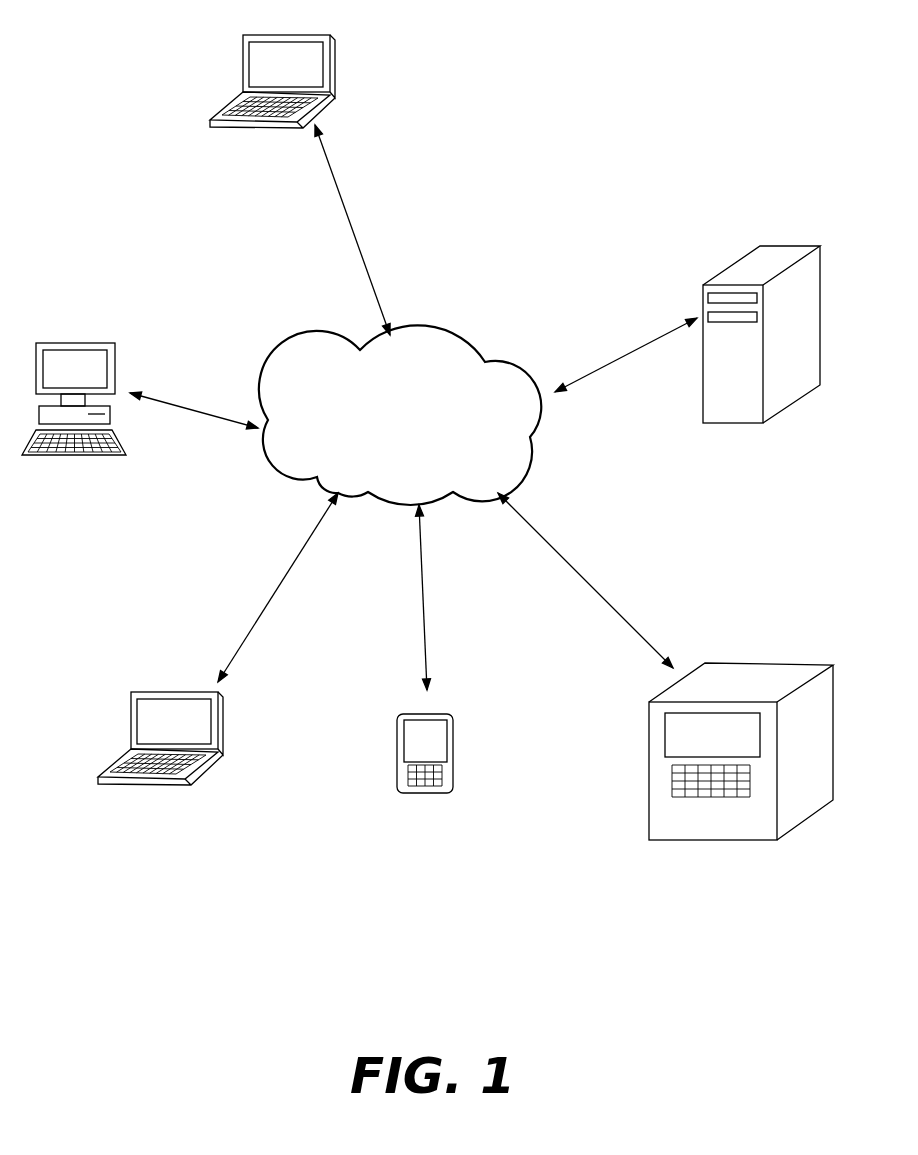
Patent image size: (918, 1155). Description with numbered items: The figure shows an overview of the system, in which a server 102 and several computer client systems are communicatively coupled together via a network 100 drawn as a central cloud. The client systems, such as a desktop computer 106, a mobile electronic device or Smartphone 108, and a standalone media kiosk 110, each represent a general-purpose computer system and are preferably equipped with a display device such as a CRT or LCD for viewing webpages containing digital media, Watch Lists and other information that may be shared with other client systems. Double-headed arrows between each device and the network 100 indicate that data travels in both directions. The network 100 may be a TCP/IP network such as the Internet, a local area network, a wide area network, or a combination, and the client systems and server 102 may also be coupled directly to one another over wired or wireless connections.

The network 100 is at (377, 451).
The server 102 is at (740, 423).
The computer client system 106 is at (115, 368).
The computer client system 108 is at (453, 757).
The computer client system 110 is at (713, 840).